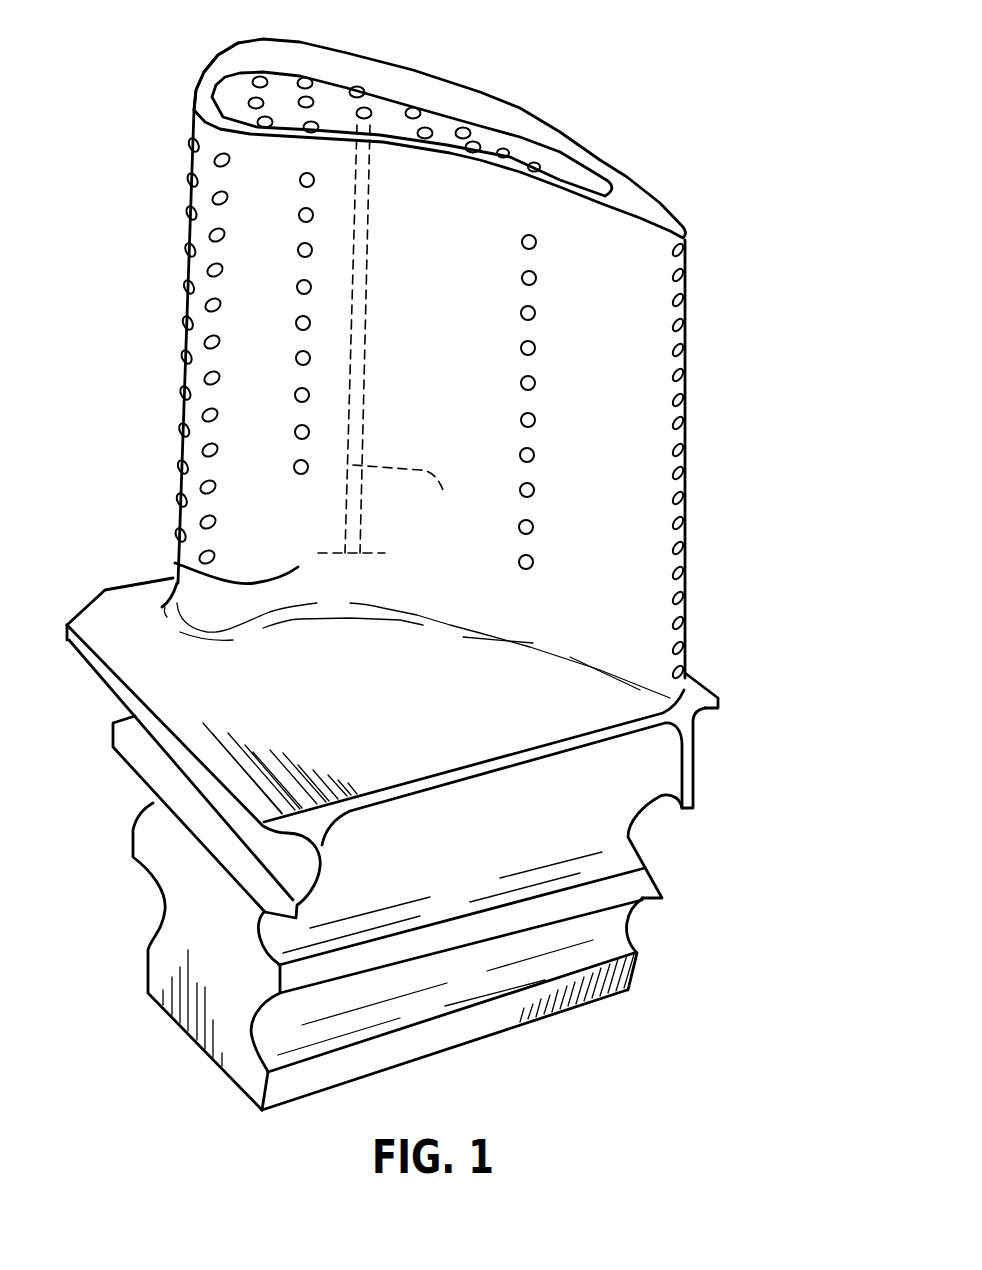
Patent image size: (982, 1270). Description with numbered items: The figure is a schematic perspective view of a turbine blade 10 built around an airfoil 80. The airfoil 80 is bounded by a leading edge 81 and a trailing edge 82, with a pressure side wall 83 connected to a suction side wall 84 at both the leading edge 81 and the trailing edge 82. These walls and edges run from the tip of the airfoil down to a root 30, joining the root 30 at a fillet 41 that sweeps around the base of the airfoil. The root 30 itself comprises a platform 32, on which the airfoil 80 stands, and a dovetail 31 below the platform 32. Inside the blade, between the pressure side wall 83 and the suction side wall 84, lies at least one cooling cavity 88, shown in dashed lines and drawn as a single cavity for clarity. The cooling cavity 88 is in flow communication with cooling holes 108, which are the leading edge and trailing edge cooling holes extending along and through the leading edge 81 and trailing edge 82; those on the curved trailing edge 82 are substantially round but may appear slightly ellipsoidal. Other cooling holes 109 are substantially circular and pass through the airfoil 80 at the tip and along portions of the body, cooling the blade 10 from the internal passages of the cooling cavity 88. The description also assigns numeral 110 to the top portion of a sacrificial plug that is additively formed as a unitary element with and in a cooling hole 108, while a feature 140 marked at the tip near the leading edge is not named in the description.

The turbine blade 10 is at (435, 569).
The root 30 is at (398, 844).
The dovetail 31 is at (232, 953).
The platform 32 is at (367, 763).
The fillet 41 is at (403, 617).
The airfoil 80 is at (435, 354).
The leading edge 81 is at (186, 405).
The trailing edge 82 is at (686, 458).
The pressure side wall 83 is at (175, 563).
The suction side wall 84 is at (513, 92).
The cooling cavity 88 is at (387, 339).
The cooling holes 108 is at (192, 145).
The other cooling holes 109 is at (358, 90).
The top portion 110 is at (522, 313).
The squealer tip leading edge 140 is at (190, 70).